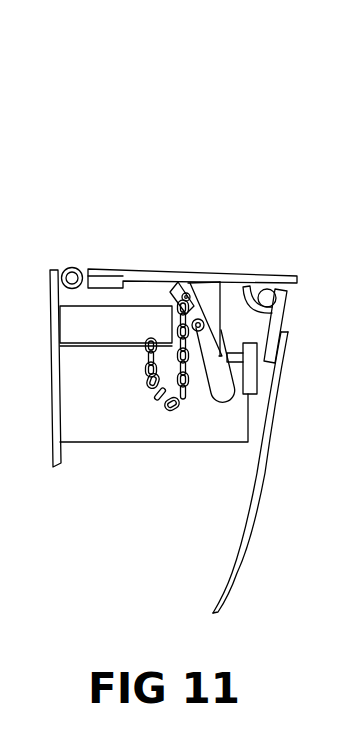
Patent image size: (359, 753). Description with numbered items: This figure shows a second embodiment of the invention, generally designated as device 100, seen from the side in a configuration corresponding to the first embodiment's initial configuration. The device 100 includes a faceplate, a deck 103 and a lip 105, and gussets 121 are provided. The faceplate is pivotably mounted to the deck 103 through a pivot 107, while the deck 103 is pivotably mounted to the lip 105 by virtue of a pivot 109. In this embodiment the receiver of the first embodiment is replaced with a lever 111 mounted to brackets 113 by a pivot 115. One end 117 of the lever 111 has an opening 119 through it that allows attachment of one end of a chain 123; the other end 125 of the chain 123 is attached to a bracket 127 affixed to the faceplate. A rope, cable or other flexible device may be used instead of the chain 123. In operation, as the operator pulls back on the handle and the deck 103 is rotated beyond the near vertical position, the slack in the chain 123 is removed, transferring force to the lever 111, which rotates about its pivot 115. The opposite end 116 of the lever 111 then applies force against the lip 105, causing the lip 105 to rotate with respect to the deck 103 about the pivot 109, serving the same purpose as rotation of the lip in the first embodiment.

The alternative embodiment device 100 is at (195, 160).
The deck 103 is at (128, 268).
The lip 105 is at (260, 502).
The pivot 107 is at (67, 265).
The pivot 109 is at (305, 305).
The lever 111 is at (215, 350).
The brackets 113 is at (207, 287).
The pivot 115 is at (204, 366).
The opposite end of the lever 116 is at (226, 384).
The one end of the lever 117 is at (184, 281).
The opening 119 is at (190, 282).
The gussets 121 is at (113, 422).
The chain 123 is at (165, 418).
The other end of the chain 125 is at (146, 347).
The bracket 127 is at (72, 344).